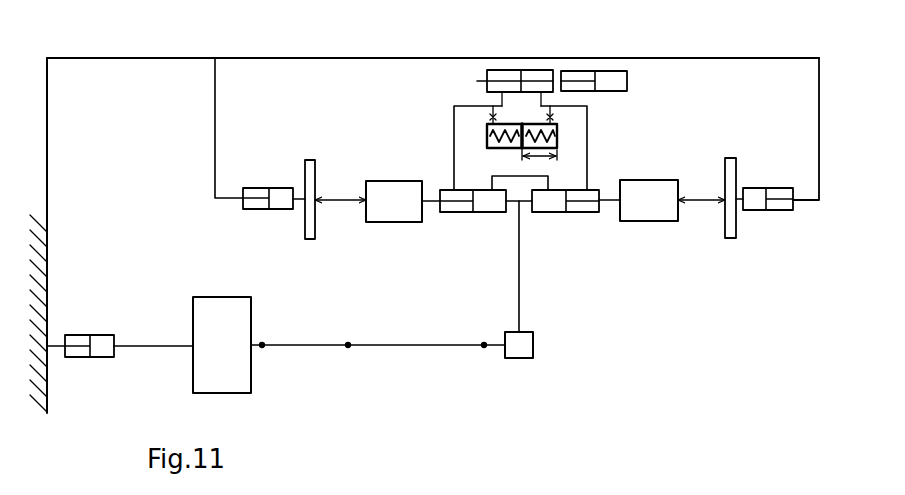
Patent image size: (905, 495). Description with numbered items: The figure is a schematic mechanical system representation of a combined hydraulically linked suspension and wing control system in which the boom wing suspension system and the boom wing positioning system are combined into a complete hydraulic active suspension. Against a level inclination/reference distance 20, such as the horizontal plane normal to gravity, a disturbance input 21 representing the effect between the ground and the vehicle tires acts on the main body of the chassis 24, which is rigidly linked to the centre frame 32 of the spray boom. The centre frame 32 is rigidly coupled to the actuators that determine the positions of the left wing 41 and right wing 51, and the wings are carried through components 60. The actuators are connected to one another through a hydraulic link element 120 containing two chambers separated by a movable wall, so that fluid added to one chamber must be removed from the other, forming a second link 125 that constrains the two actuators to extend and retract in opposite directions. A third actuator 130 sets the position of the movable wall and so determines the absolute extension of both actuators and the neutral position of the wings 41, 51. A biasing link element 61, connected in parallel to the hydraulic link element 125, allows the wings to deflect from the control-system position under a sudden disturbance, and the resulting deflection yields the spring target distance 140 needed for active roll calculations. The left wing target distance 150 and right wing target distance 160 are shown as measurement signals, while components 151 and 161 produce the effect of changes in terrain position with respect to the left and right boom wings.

The level inclination/reference distance 20 is at (47, 278).
The disturbance input 21 is at (83, 333).
The chassis 24 is at (222, 345).
The centre frame 32 is at (520, 347).
The left wing 41 is at (394, 201).
The right wing 51 is at (649, 200).
The bearing 60 is at (468, 215).
The biasing link element 61 is at (557, 132).
The hydraulic link element 120 is at (506, 70).
The second link 125 is at (507, 172).
The third actuator 130 is at (615, 70).
The spring target distance 140 is at (548, 163).
The left wing target distance 150 is at (332, 200).
The left target change input component 151 is at (275, 210).
The right wing target distance 160 is at (697, 198).
The right target change input component 161 is at (755, 215).